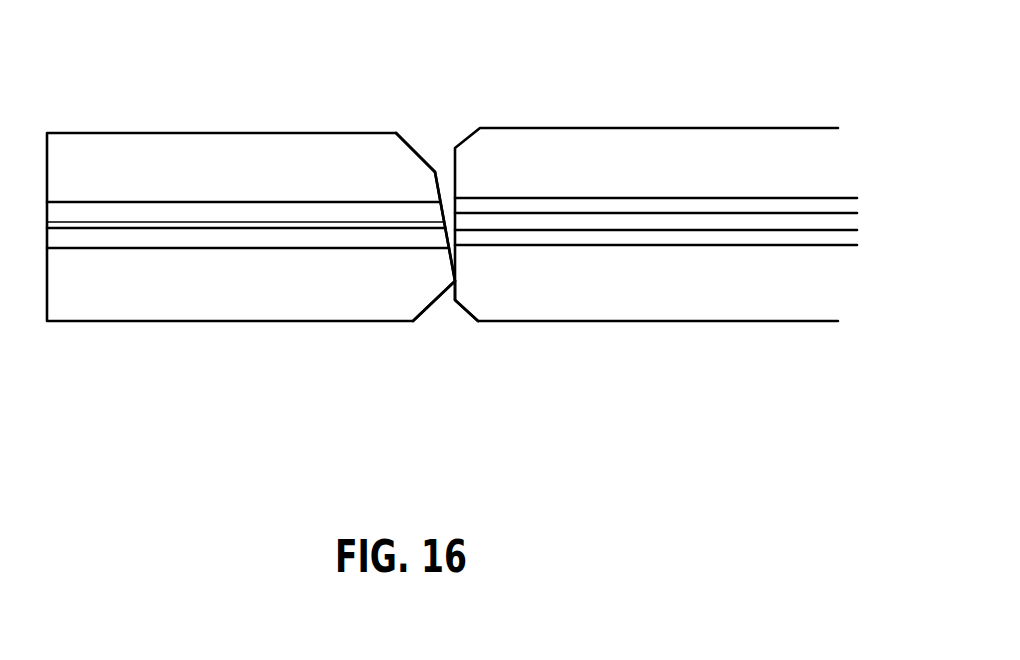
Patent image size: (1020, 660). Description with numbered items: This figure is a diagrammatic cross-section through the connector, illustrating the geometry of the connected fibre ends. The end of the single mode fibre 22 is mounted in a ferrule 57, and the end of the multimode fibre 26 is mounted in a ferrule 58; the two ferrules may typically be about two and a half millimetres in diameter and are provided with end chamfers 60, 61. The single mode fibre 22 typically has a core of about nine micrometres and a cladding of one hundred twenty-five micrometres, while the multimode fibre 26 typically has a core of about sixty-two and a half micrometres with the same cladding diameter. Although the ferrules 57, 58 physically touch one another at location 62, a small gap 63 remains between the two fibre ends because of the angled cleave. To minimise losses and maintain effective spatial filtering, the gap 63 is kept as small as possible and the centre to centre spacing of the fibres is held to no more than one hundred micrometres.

The single mode fibre 22 is at (175, 202).
The multimode fibre 26 is at (740, 198).
The ferrule 57 is at (287, 293).
The ferrule 58 is at (768, 295).
The end chamfer 60 is at (462, 307).
The end chamfer 61 is at (418, 152).
The location 62 is at (455, 282).
The gap 63 is at (447, 208).